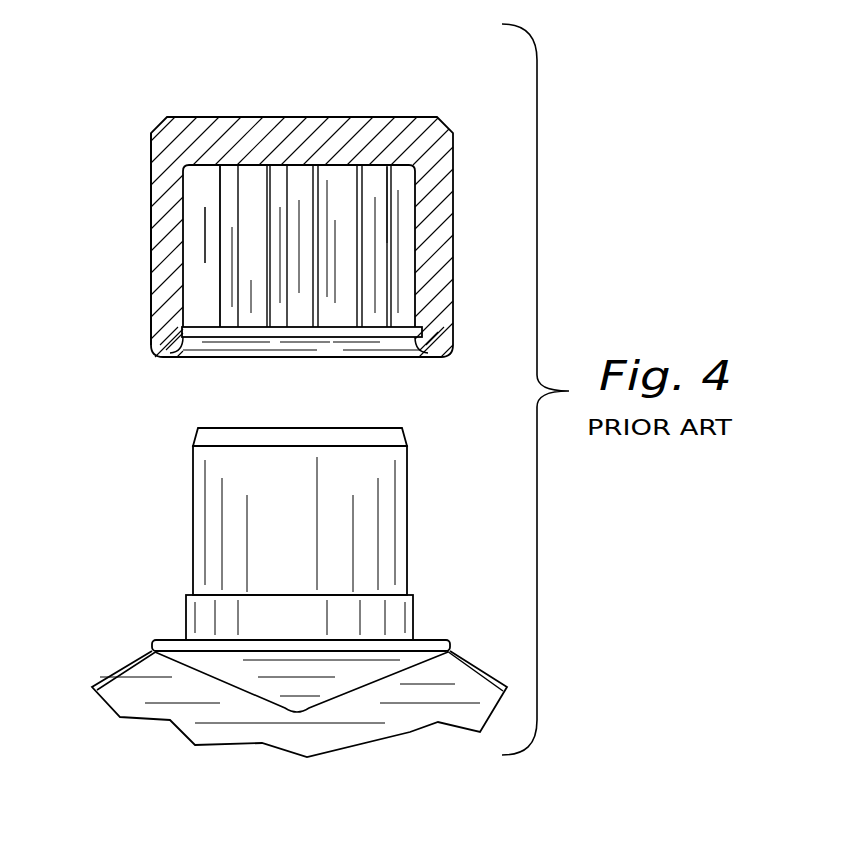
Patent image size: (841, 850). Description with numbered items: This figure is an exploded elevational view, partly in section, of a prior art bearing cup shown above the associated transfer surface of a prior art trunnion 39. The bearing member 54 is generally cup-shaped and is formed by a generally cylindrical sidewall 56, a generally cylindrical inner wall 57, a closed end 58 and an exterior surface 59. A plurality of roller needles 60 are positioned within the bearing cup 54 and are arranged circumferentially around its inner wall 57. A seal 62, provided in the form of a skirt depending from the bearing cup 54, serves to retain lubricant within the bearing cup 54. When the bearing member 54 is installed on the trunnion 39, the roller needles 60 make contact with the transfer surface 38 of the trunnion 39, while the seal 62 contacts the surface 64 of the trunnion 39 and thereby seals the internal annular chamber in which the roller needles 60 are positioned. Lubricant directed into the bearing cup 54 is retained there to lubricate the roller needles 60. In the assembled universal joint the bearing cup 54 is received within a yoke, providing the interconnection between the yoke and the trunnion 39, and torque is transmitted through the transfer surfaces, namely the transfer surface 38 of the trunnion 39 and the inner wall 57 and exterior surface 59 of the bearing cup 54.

The bearing member 54 is at (146, 154).
The cylindrical sidewall 56 is at (170, 183).
The inner wall 57 is at (192, 194).
The closed end 58 is at (343, 123).
The exterior surface 59 is at (150, 227).
The roller needles 60 is at (210, 282).
The seal 62 is at (173, 354).
The transfer surface 38 is at (210, 525).
The trunnion 39 is at (428, 521).
The surface 64 is at (172, 640).